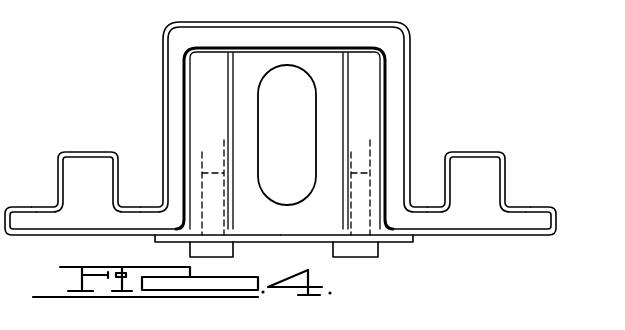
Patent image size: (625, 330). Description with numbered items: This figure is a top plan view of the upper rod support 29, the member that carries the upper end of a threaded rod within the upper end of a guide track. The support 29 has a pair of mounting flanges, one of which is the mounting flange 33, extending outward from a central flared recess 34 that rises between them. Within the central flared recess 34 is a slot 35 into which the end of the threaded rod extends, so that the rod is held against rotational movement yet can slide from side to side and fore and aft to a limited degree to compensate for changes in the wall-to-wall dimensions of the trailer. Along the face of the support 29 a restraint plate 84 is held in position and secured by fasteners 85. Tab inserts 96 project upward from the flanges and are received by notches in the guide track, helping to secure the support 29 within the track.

The support 29 is at (413, 110).
The mounting flange 33 is at (527, 222).
The central flared recess 34 is at (373, 77).
The slot 35 is at (283, 199).
The restraint plate 84 is at (405, 246).
The fastener 85 is at (362, 257).
The tab insert 96 is at (82, 172).